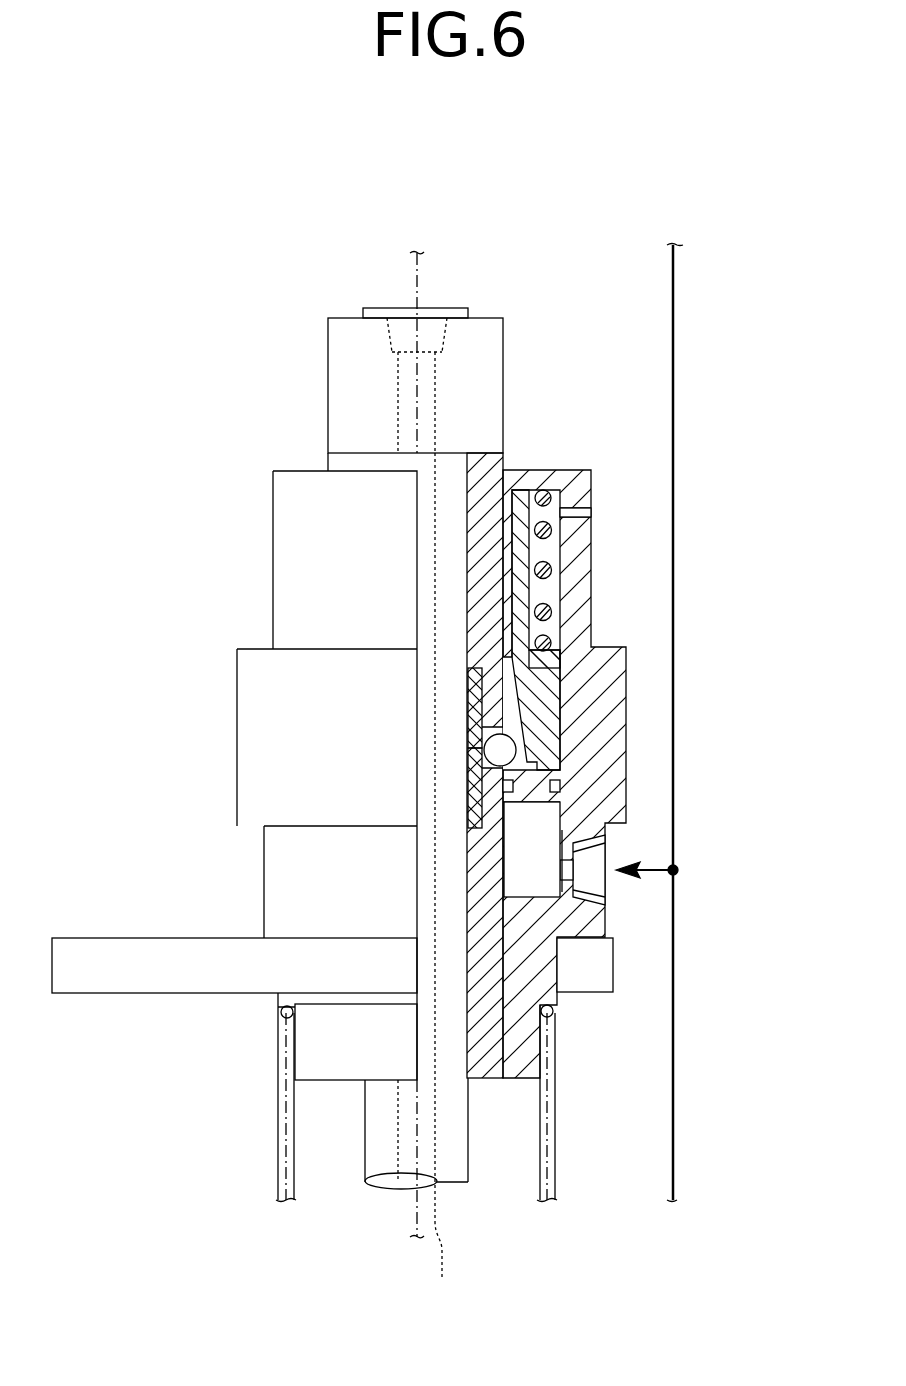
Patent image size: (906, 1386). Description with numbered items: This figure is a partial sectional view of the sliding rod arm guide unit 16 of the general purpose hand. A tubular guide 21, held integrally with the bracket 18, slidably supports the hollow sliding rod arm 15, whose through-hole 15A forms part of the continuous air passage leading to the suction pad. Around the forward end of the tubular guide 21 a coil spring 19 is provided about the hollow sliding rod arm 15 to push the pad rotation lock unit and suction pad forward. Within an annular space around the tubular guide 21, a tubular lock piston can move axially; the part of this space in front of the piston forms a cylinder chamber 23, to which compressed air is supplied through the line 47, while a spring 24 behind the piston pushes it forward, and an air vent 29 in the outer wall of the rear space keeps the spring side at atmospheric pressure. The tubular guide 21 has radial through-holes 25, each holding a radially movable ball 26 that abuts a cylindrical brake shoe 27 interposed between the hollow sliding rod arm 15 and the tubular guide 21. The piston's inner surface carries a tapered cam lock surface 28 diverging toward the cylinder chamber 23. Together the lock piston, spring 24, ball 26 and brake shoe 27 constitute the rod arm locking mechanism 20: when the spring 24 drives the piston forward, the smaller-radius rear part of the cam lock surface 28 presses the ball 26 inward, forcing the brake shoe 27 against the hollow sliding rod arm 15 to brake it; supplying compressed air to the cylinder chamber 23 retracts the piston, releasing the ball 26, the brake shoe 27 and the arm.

The sliding rod arm guide unit 16 is at (251, 330).
The line 47 is at (668, 284).
The tubular guide 21 is at (508, 471).
The air vent 29 is at (590, 510).
The spring 24 is at (553, 572).
The cam lock surface 28 is at (518, 708).
The rod arm locking mechanism 20 is at (596, 755).
The cylinder chamber 23 is at (533, 830).
The through-hole 25 is at (480, 736).
The ball 26 is at (497, 755).
The brake shoe 27 is at (473, 777).
The coil spring 19 is at (550, 1065).
The bracket 18 is at (152, 993).
The hollow sliding rod arm 15 is at (457, 1182).
The through-hole 15A is at (422, 887).